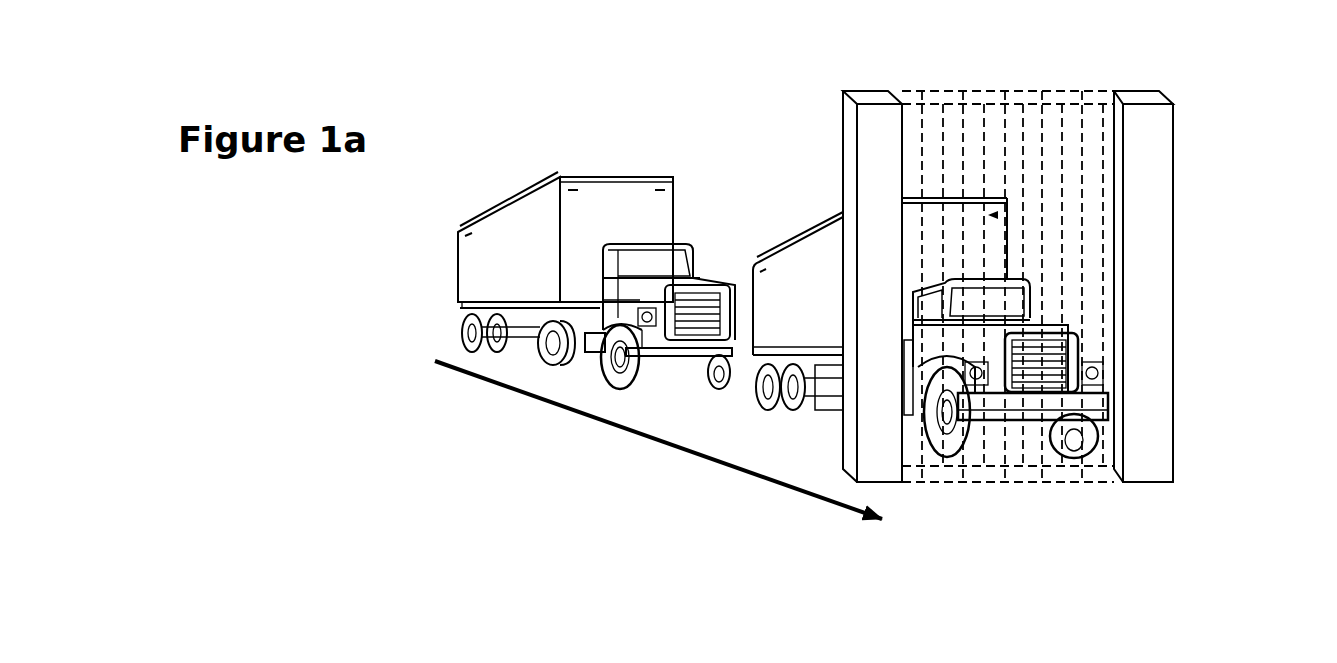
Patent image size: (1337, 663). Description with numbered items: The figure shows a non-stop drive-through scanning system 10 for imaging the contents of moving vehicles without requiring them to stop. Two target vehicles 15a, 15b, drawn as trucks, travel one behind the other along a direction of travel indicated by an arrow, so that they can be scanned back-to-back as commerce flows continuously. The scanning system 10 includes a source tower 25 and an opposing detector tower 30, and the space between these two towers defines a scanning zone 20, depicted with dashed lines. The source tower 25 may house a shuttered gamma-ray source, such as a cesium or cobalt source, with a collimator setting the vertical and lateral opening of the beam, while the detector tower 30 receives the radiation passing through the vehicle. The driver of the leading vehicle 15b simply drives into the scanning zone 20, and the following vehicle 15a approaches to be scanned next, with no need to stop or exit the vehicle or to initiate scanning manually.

The non-stop drive-through scanning system 10 is at (1217, 158).
The target vehicle 15a is at (435, 275).
The target vehicle 15b is at (768, 233).
The scanning zone 20 is at (1028, 452).
The source tower 25 is at (877, 463).
The detector tower 30 is at (1143, 457).